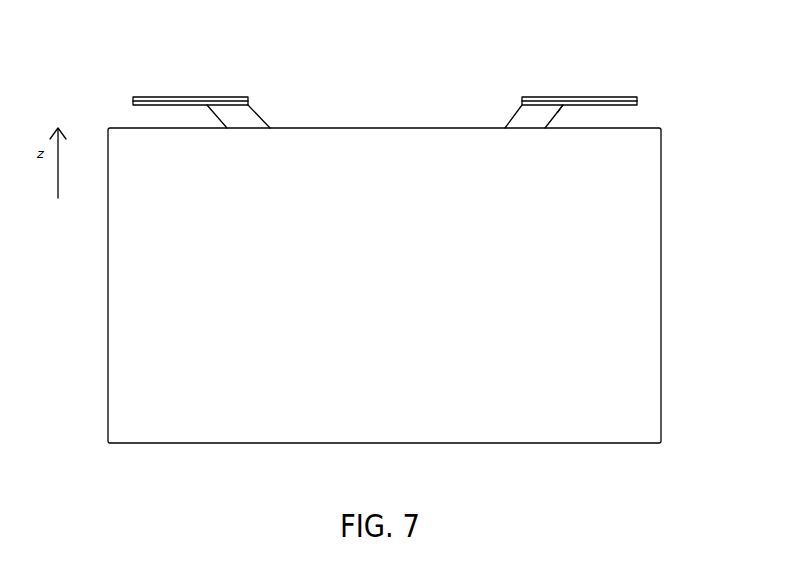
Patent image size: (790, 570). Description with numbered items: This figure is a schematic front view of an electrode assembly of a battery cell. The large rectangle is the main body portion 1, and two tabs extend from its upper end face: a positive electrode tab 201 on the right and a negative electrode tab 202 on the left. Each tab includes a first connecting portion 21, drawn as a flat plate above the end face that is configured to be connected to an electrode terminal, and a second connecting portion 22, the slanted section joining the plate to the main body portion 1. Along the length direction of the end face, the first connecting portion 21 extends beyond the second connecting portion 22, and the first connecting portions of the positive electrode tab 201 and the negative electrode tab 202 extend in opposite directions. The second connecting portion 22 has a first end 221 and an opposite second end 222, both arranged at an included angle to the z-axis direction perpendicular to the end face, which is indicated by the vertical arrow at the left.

The main body portion 1 is at (130, 275).
The first connecting portion 21 is at (143, 98).
The second connecting portion 22 is at (230, 120).
The positive electrode tab 201 is at (566, 96).
The negative electrode tab 202 is at (233, 89).
The first end 221 is at (558, 112).
The second end 222 is at (505, 127).